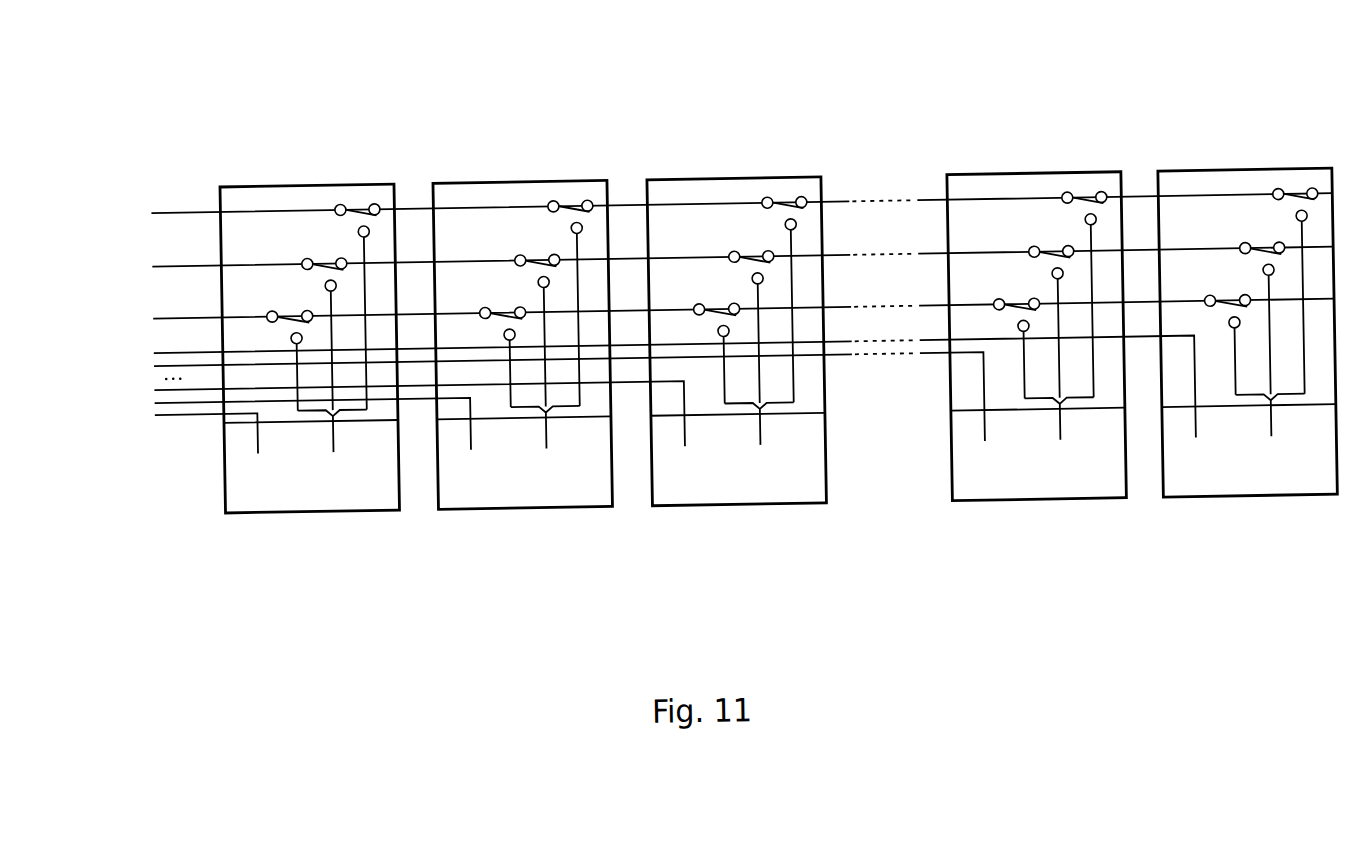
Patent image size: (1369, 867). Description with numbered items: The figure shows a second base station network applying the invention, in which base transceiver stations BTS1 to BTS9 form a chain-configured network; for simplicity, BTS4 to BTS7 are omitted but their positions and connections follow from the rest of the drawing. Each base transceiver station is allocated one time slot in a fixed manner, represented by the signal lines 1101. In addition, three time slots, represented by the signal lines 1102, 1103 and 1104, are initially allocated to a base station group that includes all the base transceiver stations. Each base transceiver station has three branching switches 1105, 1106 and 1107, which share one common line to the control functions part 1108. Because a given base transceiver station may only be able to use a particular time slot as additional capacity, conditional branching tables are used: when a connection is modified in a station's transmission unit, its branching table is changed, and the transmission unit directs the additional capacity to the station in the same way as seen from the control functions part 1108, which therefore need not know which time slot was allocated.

The signal lines 1101 is at (152, 345).
The signal line 1102 is at (167, 318).
The signal line 1103 is at (167, 266).
The signal line 1104 is at (167, 213).
The branching switch 1105 is at (1226, 318).
The branching switch 1106 is at (1268, 271).
The branching switch 1107 is at (1298, 220).
The control functions part 1108 is at (1139, 578).